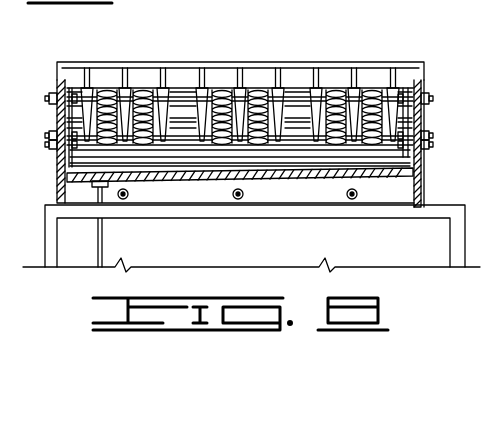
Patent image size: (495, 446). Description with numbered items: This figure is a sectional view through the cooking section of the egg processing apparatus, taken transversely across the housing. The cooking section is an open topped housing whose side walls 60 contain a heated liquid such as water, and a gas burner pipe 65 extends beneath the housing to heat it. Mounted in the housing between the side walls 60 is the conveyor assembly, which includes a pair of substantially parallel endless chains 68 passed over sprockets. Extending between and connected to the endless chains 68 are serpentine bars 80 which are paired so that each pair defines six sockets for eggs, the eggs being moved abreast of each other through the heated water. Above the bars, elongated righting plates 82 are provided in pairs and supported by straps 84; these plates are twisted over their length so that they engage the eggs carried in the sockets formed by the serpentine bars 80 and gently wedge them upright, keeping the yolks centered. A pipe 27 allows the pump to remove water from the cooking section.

The pipe 27 is at (103, 243).
The side walls 60 is at (62, 163).
The gas burner pipe 65 is at (238, 199).
The endless chains 68 is at (72, 115).
The serpentine bars 80 is at (177, 92).
The righting plates 82 is at (270, 88).
The straps 84 is at (307, 66).